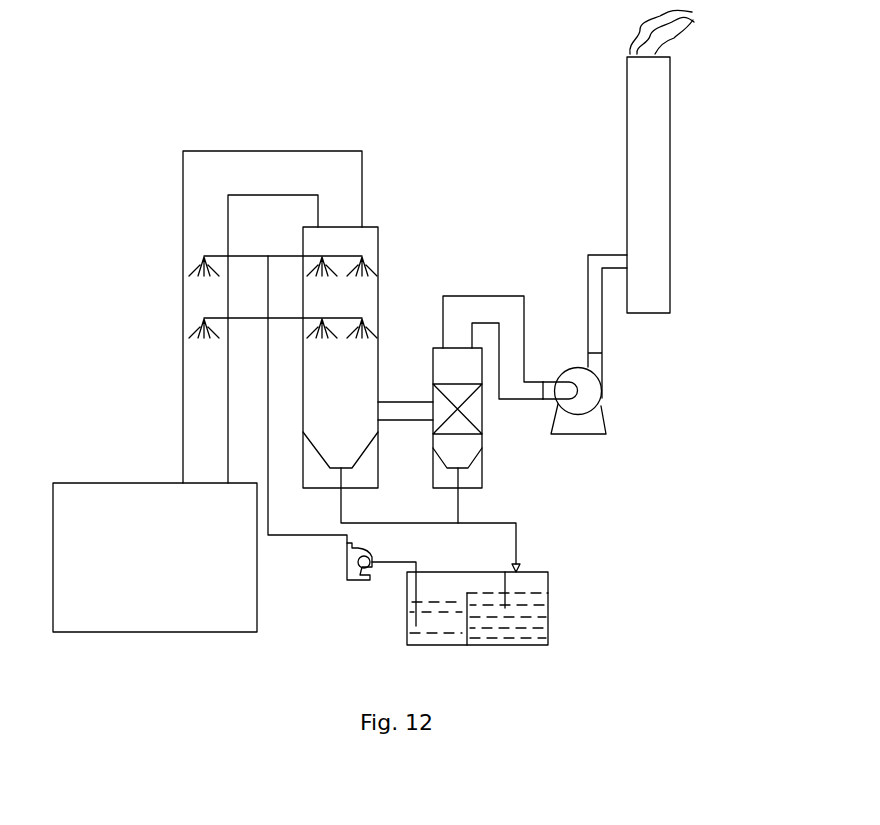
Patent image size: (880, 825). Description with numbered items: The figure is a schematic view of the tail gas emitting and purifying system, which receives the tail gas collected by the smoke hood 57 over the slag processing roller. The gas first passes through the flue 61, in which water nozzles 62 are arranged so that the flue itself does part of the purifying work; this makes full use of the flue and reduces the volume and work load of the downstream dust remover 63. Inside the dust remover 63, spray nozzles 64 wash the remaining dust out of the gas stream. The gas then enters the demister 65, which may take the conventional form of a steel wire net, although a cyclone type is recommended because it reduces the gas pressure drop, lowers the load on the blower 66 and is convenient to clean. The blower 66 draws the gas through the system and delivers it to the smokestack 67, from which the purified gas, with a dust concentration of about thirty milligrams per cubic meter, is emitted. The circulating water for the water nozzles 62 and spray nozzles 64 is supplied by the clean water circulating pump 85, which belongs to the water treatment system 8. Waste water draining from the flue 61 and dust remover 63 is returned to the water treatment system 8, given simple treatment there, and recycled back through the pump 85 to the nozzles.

The smoke hood 57 is at (207, 540).
The flue 61 is at (207, 393).
The water nozzles 62 is at (203, 262).
The dust remover 63 is at (330, 243).
The spray nozzles 64 is at (362, 258).
The demister 65 is at (450, 367).
The blower 66 is at (577, 383).
The smokestack 67 is at (645, 287).
The water treatment system 8 is at (518, 613).
The clean water circulating pump 85 is at (350, 573).